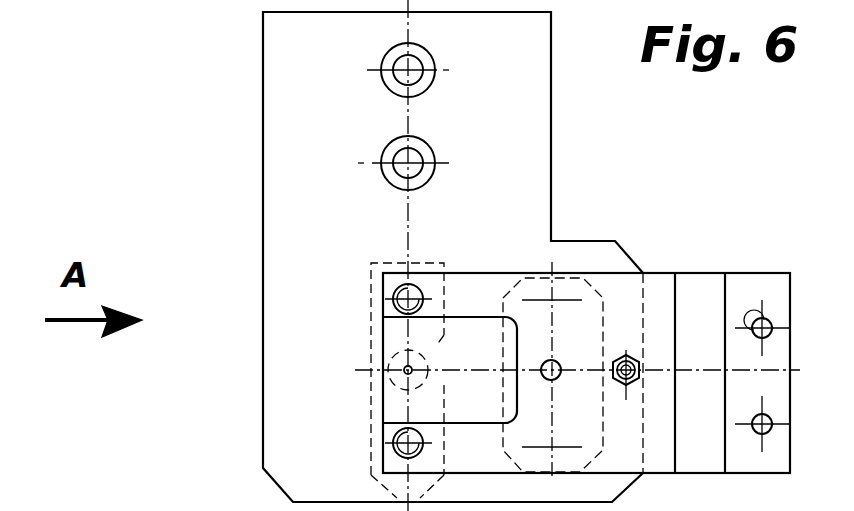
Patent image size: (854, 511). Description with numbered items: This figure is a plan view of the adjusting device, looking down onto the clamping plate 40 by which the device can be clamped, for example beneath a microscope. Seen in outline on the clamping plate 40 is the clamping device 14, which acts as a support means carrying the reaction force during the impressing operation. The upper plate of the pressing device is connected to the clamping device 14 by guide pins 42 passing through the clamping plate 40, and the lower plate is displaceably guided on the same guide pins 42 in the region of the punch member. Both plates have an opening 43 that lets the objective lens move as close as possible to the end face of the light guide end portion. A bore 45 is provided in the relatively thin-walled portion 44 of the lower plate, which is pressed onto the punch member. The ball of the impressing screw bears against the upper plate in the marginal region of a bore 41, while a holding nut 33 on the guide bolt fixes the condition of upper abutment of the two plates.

The clamping plate 40 is at (532, 184).
The clamping device 14 is at (377, 332).
The thin-walled portion 44 is at (472, 340).
The guide pins 42 is at (420, 283).
The opening 43 is at (404, 400).
The bore 45 is at (403, 372).
The bore 41 is at (555, 378).
The holding nut 33 is at (627, 352).